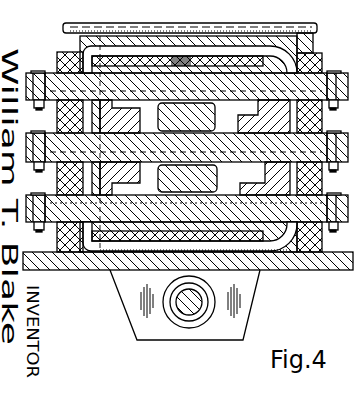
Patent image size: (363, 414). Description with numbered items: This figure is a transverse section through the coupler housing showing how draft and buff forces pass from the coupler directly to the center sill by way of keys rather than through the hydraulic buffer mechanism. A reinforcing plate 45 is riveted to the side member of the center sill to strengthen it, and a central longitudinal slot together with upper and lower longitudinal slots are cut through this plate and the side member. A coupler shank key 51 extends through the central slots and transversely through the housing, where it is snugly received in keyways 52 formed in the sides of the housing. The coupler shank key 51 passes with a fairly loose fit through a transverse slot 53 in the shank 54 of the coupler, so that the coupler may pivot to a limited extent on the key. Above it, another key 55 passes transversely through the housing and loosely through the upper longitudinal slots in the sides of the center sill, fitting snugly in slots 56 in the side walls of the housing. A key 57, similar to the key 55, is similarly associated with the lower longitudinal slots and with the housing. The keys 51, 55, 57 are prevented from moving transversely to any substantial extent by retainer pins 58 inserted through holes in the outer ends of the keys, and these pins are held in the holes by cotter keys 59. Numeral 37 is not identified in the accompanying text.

The tubular passage 37 is at (96, 52).
The reinforcing plate 45 is at (57, 59).
The coupler shank key 51 is at (36, 166).
The keyways 52 is at (100, 128).
The transverse slot 53 is at (212, 122).
The shank 54 is at (157, 185).
The key 55 is at (26, 80).
The slots 56 is at (186, 36).
The key 57 is at (341, 225).
The retainer pins 58 is at (338, 70).
The cotter keys 59 is at (329, 170).